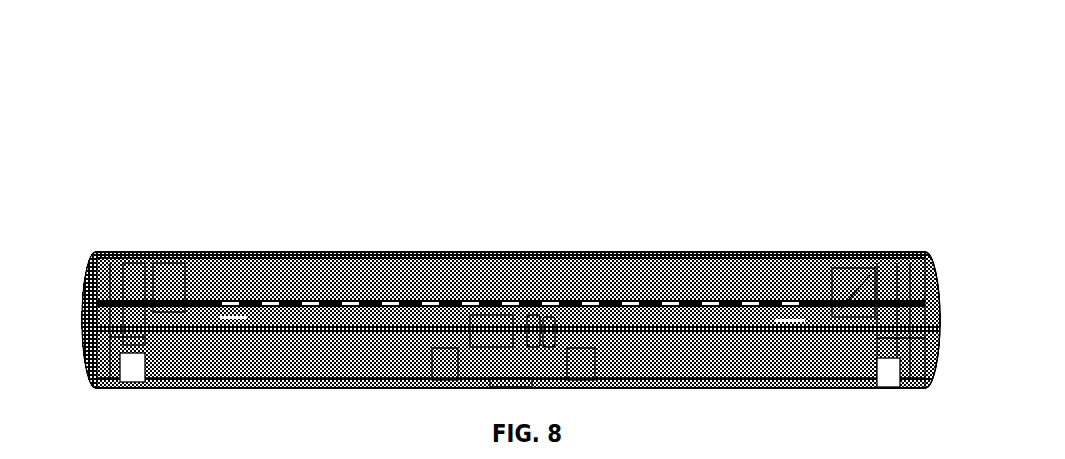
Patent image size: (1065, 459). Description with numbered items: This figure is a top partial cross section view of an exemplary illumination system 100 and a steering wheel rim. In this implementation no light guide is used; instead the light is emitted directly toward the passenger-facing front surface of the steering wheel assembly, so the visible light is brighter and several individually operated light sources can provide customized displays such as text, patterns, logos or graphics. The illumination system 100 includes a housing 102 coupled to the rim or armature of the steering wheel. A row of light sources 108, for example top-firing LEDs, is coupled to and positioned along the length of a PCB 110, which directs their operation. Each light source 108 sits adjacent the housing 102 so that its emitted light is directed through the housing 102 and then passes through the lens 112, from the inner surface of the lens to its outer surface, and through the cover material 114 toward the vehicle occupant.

The illumination system 100 is at (553, 212).
The housing 102 is at (575, 268).
The light source 108 is at (673, 303).
The PCB 110 is at (917, 255).
The lens 112 is at (318, 253).
The cover material 114 is at (415, 253).